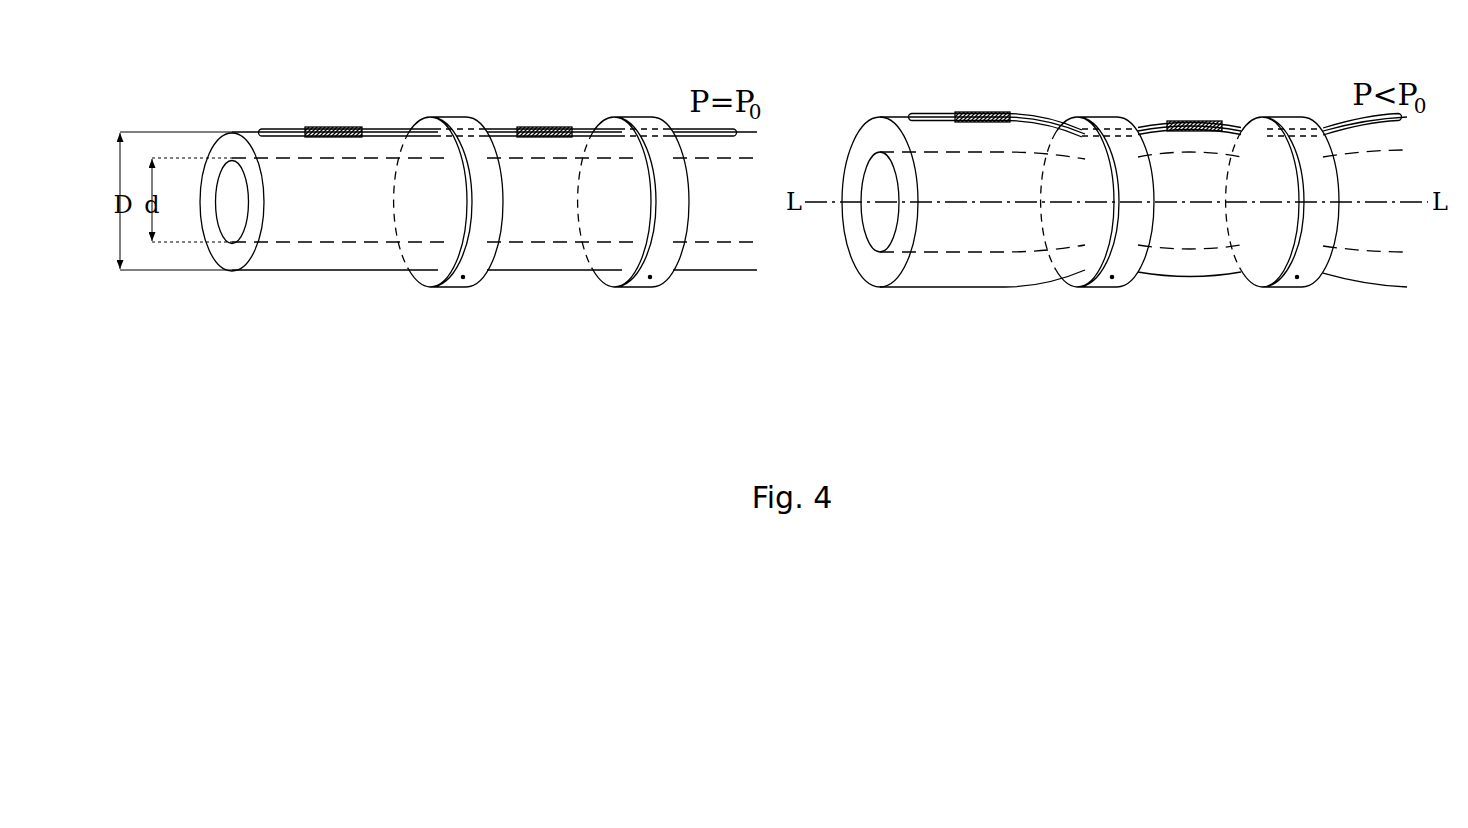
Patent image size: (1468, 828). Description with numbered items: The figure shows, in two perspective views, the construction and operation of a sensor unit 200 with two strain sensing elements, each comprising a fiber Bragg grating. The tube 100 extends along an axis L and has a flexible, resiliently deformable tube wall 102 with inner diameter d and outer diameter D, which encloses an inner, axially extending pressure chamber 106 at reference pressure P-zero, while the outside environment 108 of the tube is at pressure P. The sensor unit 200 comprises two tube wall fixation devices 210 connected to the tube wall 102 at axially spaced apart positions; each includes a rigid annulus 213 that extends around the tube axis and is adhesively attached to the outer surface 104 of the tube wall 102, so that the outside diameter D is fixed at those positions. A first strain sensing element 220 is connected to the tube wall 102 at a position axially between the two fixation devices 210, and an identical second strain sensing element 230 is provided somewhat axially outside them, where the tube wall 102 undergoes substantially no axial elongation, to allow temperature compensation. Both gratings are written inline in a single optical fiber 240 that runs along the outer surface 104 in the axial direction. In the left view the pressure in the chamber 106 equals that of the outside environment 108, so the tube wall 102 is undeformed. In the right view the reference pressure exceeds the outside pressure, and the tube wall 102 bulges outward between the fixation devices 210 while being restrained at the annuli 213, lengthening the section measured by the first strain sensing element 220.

The tube 100 is at (232, 112).
The tube wall 102 is at (232, 147).
The outer surface 104 is at (317, 273).
The inner pressure chamber 106 is at (240, 210).
The outside environment 108 is at (464, 97).
The sensor unit 200 is at (878, 240).
The tube wall fixation device 210 is at (481, 107).
The annulus 213 is at (1297, 337).
The first strain sensing element 220 is at (547, 123).
The second strain sensing element 230 is at (335, 125).
The optical fiber 240 is at (277, 130).